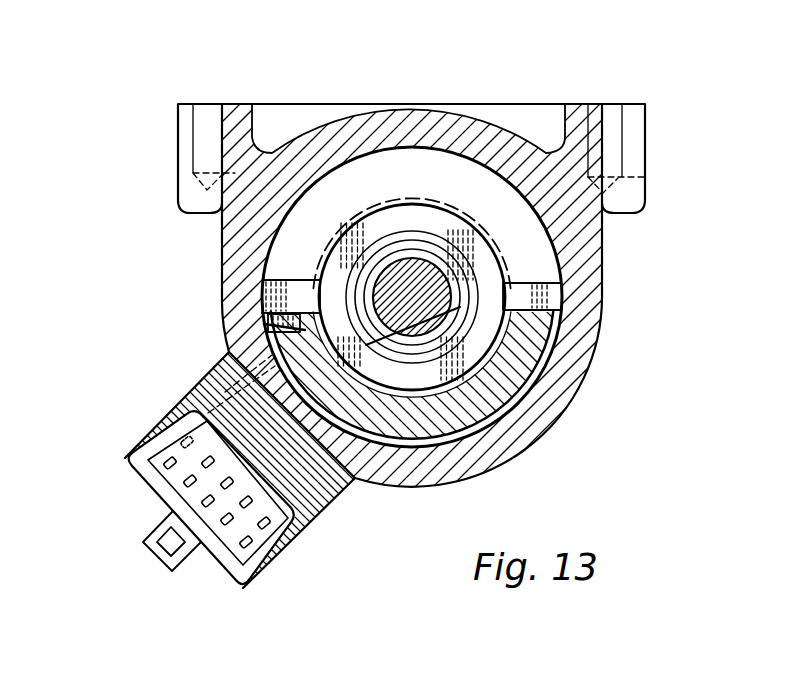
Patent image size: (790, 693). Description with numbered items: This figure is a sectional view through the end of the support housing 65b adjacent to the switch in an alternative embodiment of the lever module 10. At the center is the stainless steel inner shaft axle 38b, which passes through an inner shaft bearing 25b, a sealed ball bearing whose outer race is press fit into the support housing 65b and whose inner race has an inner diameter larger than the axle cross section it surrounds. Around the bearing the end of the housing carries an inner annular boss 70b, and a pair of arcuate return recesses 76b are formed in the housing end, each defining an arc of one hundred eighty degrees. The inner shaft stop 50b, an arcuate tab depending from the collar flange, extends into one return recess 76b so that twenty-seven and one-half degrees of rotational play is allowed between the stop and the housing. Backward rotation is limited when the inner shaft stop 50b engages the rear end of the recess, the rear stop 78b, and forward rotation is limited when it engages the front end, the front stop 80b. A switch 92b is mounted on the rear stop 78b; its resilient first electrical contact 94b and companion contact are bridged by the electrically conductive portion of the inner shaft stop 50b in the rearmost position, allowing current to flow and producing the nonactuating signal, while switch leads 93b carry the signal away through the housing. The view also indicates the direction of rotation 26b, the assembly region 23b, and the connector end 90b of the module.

The lever module 10 is at (585, 336).
The motor assembly 23b is at (514, 496).
The inner shaft bearing 25b is at (423, 243).
The direction of rotation 26b is at (422, 519).
The inner shaft axle 38b is at (389, 261).
The inner shaft stop 50b is at (520, 396).
The support housing 65b is at (222, 238).
The inner annular boss 70b is at (488, 270).
The return recess 76b is at (466, 153).
The rear stop 78b is at (345, 222).
The front stop 80b is at (507, 333).
The connector 90b is at (284, 556).
The switch 92b is at (300, 331).
The switch leads 93b is at (187, 440).
The first electrical contact 94b is at (286, 320).